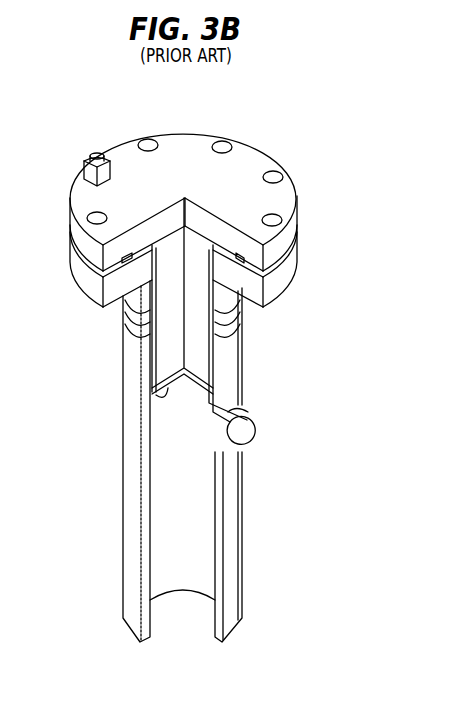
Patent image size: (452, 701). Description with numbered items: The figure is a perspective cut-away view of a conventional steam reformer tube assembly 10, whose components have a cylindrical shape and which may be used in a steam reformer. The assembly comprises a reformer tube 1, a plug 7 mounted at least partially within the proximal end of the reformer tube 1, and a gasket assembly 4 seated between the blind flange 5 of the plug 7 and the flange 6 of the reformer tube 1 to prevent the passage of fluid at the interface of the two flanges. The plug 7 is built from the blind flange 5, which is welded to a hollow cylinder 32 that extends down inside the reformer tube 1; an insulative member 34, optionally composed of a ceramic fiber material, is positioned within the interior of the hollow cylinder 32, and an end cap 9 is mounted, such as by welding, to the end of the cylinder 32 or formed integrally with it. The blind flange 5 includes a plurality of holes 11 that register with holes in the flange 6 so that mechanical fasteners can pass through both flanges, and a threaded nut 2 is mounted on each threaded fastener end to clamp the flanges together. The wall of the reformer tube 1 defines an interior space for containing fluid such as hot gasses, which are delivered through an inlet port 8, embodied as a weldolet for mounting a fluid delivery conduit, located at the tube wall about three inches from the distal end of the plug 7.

The reformer tube 1 is at (240, 545).
The threaded nut 2 is at (83, 160).
The gasket assembly 4 is at (227, 247).
The blind flange 5 is at (287, 190).
The flange 6 is at (296, 263).
The plug 7 is at (163, 349).
The inlet port 8 is at (248, 413).
The end cap 9 is at (167, 400).
The steam reformer tube assembly 10 is at (298, 124).
The holes 11 is at (146, 142).
The hollow cylinder 32 is at (214, 306).
The insulative member 34 is at (193, 344).